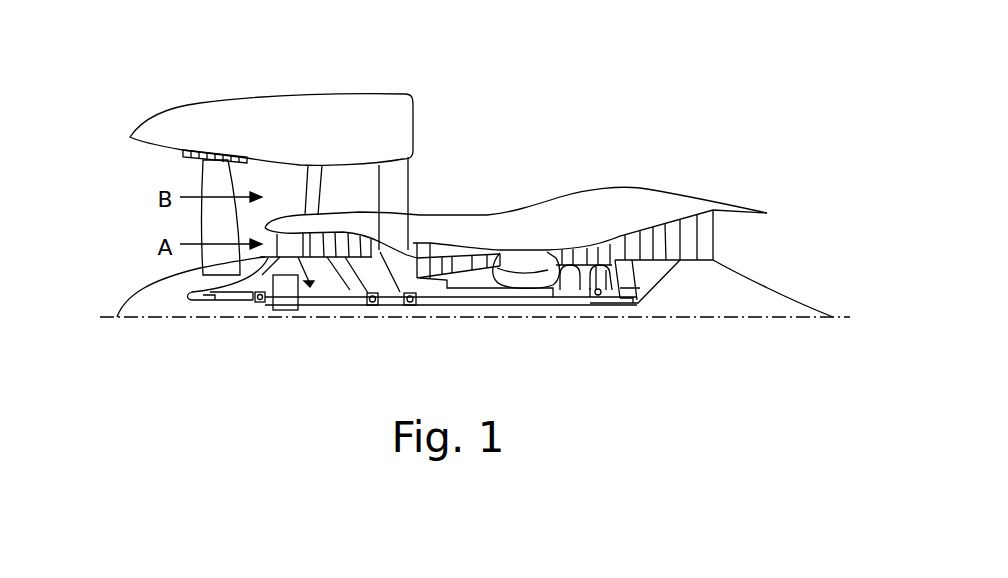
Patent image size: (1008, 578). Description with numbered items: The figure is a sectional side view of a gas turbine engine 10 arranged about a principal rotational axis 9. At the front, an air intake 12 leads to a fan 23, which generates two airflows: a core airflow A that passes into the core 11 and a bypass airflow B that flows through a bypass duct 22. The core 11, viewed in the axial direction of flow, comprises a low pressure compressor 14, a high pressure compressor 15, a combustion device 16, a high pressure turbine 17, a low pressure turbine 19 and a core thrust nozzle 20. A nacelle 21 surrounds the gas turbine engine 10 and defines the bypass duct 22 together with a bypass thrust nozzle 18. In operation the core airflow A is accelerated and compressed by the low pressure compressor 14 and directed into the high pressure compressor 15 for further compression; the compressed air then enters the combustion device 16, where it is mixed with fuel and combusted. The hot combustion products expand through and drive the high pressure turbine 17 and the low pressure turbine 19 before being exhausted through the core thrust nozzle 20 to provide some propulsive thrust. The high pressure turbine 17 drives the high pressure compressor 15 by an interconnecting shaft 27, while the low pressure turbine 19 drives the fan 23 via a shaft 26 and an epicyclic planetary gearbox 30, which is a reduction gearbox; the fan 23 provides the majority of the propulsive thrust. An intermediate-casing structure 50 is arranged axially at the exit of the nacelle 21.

The principal rotational axis 9 is at (737, 318).
The gas turbine engine 10 is at (175, 109).
The core 11 is at (537, 230).
The air intake 12 is at (130, 172).
The low pressure compressor 14 is at (340, 237).
The high pressure compressor 15 is at (463, 262).
The combustion device 16 is at (523, 268).
The high pressure turbine 17 is at (600, 245).
The bypass thrust nozzle 18 is at (724, 112).
The low pressure turbine 19 is at (695, 247).
The core thrust nozzle 20 is at (773, 245).
The nacelle 21 is at (390, 108).
The bypass duct 22 is at (612, 150).
The fan 23 is at (208, 232).
The shaft 26 is at (432, 310).
The interconnecting shaft 27 is at (490, 307).
The epicyclic planetary gearbox 30 is at (285, 310).
The intermediate-casing structure 50 is at (410, 208).